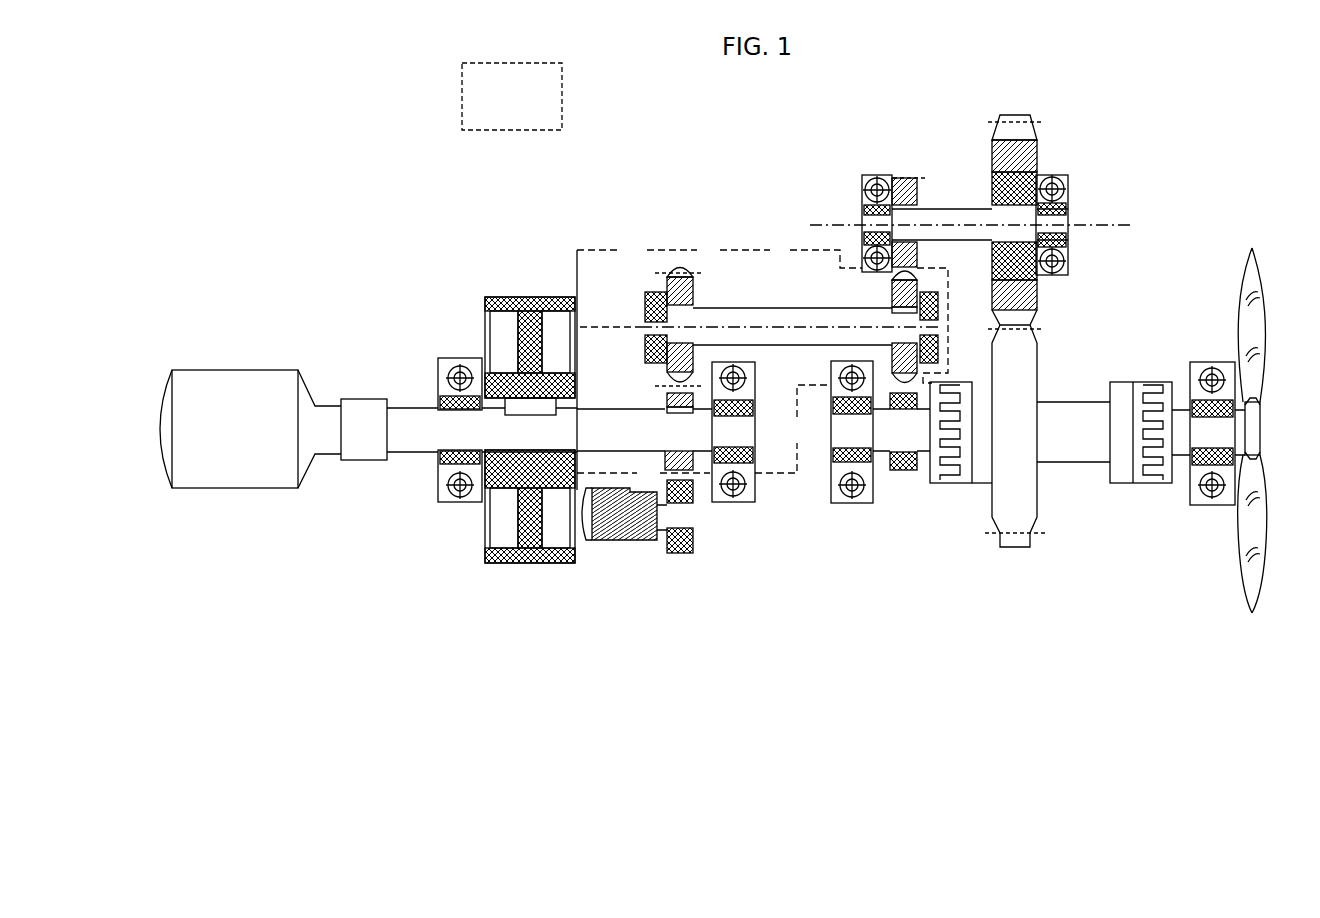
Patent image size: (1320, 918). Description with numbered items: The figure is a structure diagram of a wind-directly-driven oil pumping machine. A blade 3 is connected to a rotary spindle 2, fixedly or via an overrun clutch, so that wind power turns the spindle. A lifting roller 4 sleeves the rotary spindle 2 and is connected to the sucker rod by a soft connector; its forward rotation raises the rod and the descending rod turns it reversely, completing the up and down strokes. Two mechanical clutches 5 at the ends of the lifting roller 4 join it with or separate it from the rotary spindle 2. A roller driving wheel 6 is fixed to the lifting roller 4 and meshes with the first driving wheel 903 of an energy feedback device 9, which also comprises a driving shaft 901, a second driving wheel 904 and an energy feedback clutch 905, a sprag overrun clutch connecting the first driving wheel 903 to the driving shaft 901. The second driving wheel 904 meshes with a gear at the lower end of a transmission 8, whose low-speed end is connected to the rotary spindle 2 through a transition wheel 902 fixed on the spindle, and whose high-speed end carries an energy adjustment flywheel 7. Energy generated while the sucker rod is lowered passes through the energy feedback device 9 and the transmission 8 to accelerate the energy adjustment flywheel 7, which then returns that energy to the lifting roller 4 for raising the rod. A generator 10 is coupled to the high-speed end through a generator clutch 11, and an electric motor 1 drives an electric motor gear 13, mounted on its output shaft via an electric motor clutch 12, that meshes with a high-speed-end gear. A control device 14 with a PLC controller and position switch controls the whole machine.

The electric motor 1 is at (622, 523).
The rotary spindle 2 is at (888, 442).
The blade 3 is at (1255, 285).
The lifting roller 4 is at (1067, 452).
The clutch 5 is at (953, 473).
The roller driving wheel 6 is at (1015, 527).
The energy adjustment flywheel 7 is at (528, 300).
The transmission 8 is at (711, 274).
The energy feedback device 9 is at (971, 188).
The generator 10 is at (230, 390).
The generator clutch 11 is at (366, 410).
The electric motor clutch 12 is at (690, 533).
The electric motor gear 13 is at (680, 555).
The control device 14 is at (492, 75).
The driving shaft 901 is at (948, 212).
The transition wheel 902 is at (903, 473).
The first driving wheel 903 is at (1003, 120).
The second driving wheel 904 is at (890, 190).
The energy feedback clutch 905 is at (1040, 170).